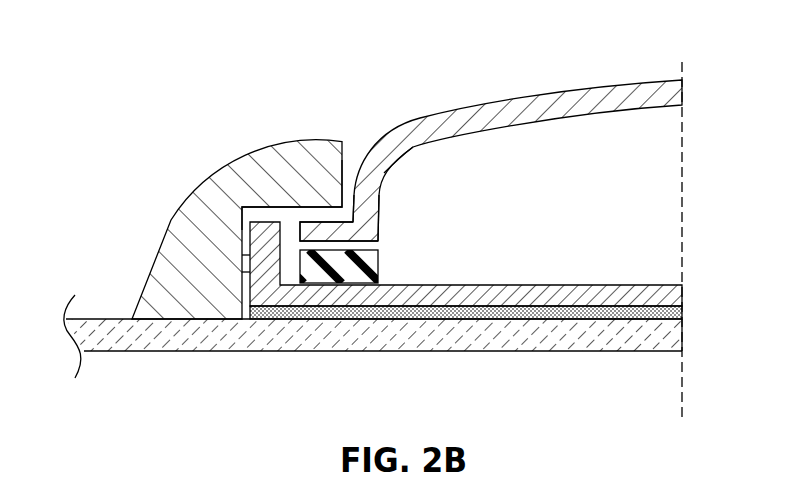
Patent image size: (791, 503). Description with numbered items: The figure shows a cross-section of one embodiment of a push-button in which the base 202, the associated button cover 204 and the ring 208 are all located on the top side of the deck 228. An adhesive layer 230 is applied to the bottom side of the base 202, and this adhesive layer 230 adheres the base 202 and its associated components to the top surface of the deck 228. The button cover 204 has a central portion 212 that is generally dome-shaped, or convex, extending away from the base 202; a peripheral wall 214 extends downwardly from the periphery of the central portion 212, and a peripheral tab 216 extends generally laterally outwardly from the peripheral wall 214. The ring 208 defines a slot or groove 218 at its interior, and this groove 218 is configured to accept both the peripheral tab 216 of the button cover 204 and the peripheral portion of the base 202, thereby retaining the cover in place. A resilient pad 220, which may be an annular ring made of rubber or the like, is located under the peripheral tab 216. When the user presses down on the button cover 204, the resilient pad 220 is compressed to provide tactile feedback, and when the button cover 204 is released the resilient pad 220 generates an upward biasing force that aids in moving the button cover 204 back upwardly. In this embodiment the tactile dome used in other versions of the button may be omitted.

The base 202 is at (445, 298).
The button cover 204 is at (405, 157).
The ring 208 is at (157, 263).
The central portion 212 is at (502, 106).
The peripheral wall 214 is at (377, 193).
The peripheral tab 216 is at (332, 228).
The groove 218 is at (250, 190).
The resilient pad 220 is at (325, 268).
The deck 228 is at (580, 340).
The adhesive layer 230 is at (515, 310).